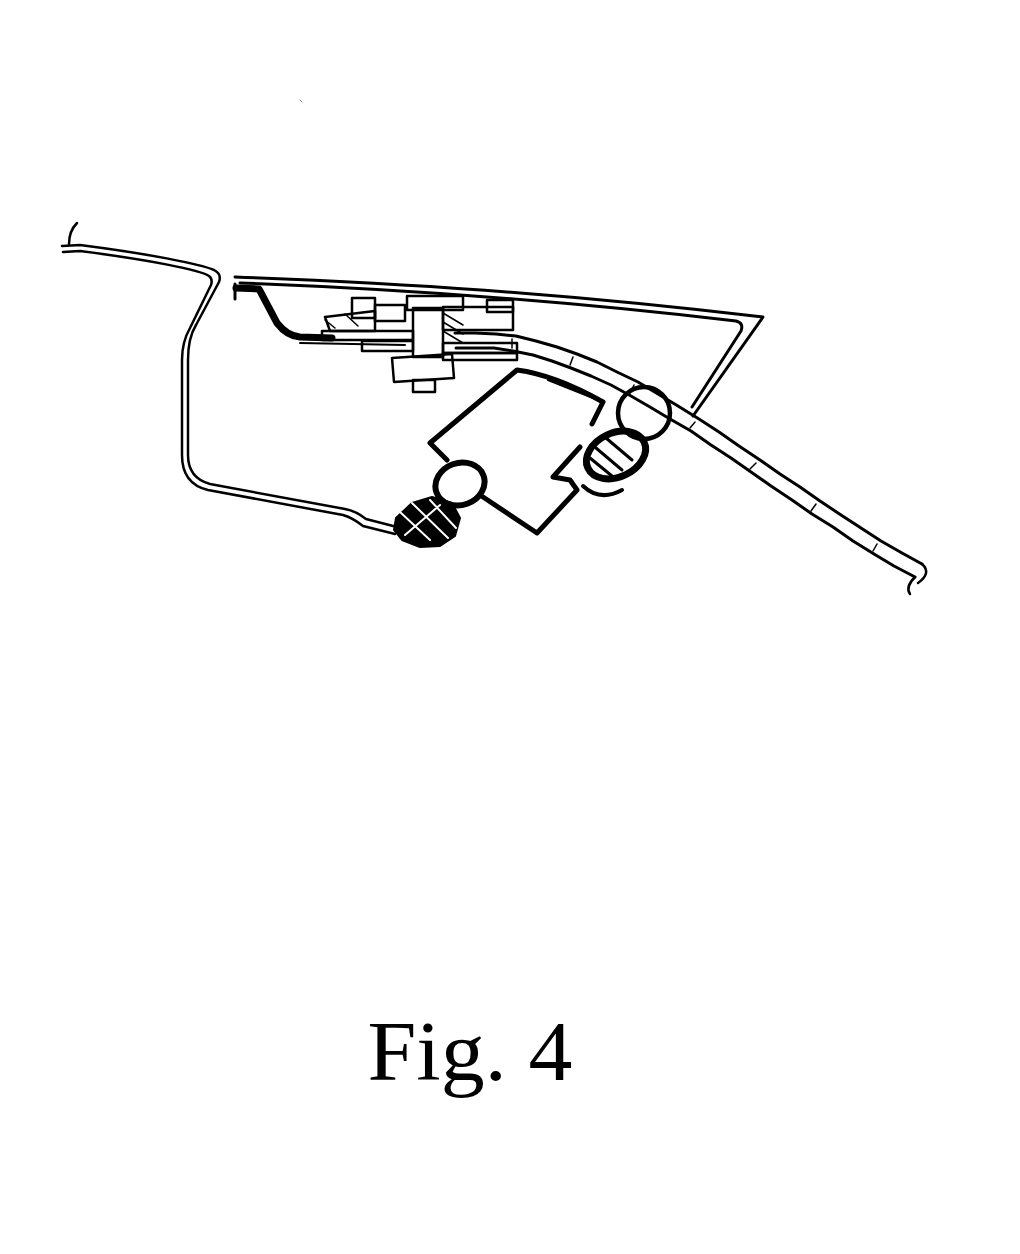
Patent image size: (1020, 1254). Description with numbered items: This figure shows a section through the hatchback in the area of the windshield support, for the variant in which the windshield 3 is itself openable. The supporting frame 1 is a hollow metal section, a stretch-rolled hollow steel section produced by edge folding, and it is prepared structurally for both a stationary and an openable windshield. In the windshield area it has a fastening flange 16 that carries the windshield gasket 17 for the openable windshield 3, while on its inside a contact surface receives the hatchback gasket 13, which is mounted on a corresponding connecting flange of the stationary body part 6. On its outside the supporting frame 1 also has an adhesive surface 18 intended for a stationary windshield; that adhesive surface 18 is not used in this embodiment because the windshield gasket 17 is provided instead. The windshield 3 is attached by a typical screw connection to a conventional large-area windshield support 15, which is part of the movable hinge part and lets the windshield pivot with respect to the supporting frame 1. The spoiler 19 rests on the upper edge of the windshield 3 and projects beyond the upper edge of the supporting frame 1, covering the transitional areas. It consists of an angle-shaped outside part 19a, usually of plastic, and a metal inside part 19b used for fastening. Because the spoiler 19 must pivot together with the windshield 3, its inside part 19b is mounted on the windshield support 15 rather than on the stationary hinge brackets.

The supporting frame 1 is at (535, 533).
The windshield 3 is at (782, 472).
The stationary body part 6 is at (222, 489).
The hatchback gasket 13 is at (462, 507).
The windshield support 15 is at (457, 312).
The fastening flange 16 is at (608, 478).
The windshield gasket 17 is at (647, 439).
The adhesive surface 18 is at (562, 385).
The spoiler 19 is at (331, 166).
The outside part 19a is at (375, 283).
The inside part 19b is at (280, 323).